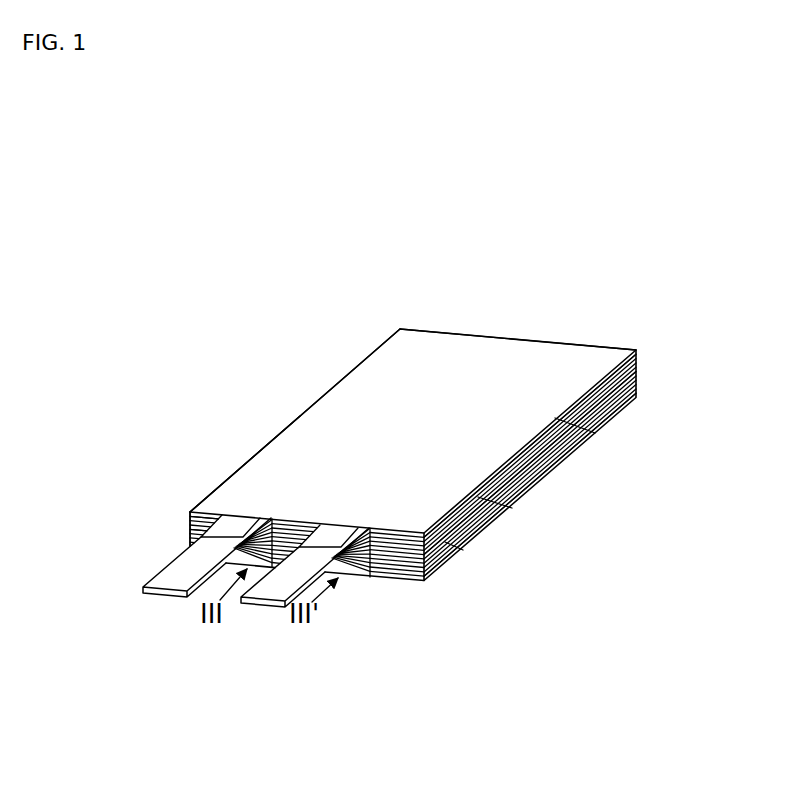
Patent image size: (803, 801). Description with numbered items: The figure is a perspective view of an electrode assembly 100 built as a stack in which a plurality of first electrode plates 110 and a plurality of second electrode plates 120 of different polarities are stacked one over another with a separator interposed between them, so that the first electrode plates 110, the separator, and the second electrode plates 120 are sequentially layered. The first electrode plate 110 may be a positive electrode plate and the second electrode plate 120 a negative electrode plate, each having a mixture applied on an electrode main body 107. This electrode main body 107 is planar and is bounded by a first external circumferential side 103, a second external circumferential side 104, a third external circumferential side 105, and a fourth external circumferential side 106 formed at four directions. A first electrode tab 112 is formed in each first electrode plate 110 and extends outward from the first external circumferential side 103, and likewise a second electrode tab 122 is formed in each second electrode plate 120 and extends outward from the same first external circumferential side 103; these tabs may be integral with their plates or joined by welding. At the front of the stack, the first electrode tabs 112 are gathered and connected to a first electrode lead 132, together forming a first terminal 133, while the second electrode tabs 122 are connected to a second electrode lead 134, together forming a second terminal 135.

The electrode assembly 100 is at (348, 289).
The first external circumferential side 103 is at (219, 520).
The second external circumferential side 104 is at (271, 441).
The third external circumferential side 105 is at (515, 338).
The fourth external circumferential side 106 is at (590, 433).
The electrode main body 107 is at (310, 393).
The first electrode plate 110 is at (510, 509).
The first electrode tab 112 is at (220, 534).
The second electrode plate 120 is at (462, 551).
The second electrode tab 122 is at (345, 537).
The first electrode lead 132 is at (160, 578).
The first terminal 133 is at (153, 466).
The second electrode lead 134 is at (265, 603).
The second terminal 135 is at (407, 687).